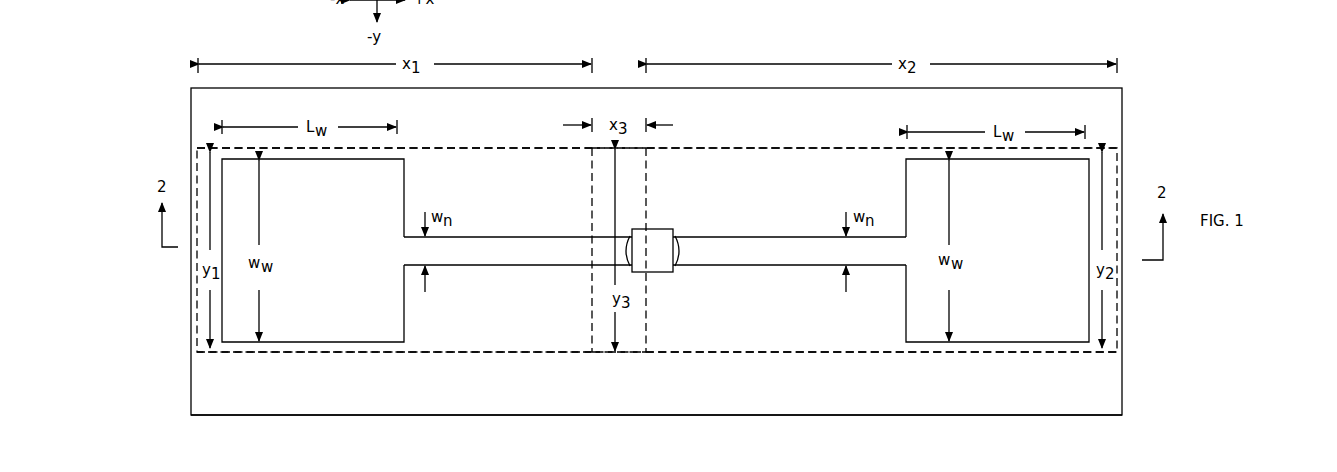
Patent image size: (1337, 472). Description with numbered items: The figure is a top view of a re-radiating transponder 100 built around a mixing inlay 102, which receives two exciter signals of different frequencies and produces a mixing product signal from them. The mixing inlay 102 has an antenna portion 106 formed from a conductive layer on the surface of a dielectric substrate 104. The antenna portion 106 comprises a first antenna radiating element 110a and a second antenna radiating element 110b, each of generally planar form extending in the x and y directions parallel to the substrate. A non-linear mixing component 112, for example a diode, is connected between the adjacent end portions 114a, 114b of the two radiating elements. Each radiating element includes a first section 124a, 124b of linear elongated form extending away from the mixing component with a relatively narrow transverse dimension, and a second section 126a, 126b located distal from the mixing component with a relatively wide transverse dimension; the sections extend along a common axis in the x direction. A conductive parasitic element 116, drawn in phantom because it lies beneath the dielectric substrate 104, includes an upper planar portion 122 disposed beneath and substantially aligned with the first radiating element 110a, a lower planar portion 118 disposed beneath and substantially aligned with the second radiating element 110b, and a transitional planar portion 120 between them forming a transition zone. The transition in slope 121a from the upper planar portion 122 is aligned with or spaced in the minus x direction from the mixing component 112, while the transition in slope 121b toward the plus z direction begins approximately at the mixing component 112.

The re-radiating transponder 100 is at (1158, 108).
The mixing inlay 102 is at (328, 441).
The dielectric substrate 104 is at (890, 398).
The antenna portion 106 is at (794, 222).
The first antenna radiating element 110a is at (461, 286).
The second antenna radiating element 110b is at (876, 295).
The non-linear mixing component 112 is at (662, 228).
The end portion of first radiating element 114a is at (567, 242).
The end portion of second radiating element 114b is at (715, 238).
The conductive parasitic element 116 is at (771, 142).
The lower planar portion 118 is at (873, 352).
The transitional planar portion 120 is at (637, 352).
The transition in slope from upper planar portion 121a is at (592, 307).
The transition in slope toward +z direction 121b is at (645, 325).
The upper planar portion 122 is at (427, 353).
The first section of first radiating element 124a is at (518, 236).
The first section of second radiating element 124b is at (789, 234).
The second section of first radiating element 126a is at (313, 250).
The second section of second radiating element 126b is at (997, 250).